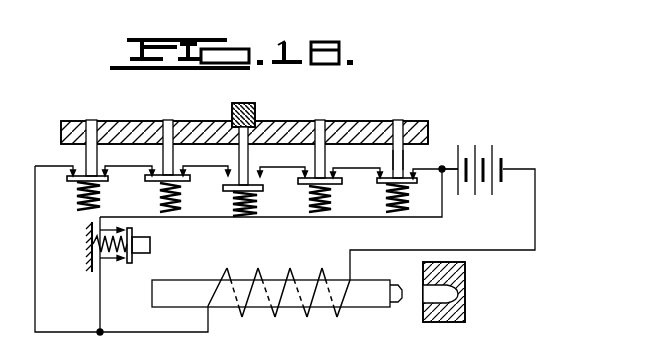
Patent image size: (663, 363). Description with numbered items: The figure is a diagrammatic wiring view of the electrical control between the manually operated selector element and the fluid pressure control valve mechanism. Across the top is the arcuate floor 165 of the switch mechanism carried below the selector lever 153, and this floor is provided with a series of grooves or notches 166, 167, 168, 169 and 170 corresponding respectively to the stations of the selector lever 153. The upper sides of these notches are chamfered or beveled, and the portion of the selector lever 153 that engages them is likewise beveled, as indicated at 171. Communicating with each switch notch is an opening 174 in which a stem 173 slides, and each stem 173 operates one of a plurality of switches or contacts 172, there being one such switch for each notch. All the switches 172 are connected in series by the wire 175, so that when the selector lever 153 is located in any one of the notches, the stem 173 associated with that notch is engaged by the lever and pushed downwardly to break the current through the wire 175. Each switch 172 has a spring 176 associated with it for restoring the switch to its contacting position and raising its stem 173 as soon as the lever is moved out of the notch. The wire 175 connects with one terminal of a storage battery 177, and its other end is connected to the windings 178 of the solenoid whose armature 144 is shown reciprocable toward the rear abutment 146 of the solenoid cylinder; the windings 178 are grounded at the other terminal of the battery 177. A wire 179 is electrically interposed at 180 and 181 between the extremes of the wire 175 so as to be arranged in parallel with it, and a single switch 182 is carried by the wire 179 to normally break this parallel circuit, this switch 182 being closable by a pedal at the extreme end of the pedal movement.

The armature 144 is at (258, 308).
The rear abutment 146 is at (462, 276).
The selector lever 153 is at (233, 103).
The arcuate floor 165 is at (430, 128).
The notch 166 is at (248, 92).
The notch 167 is at (320, 122).
The notch 168 is at (402, 122).
The notch 169 is at (168, 120).
The notch 170 is at (90, 120).
The beveled portion 171 is at (254, 124).
The switch 172 is at (382, 183).
The stem 173 is at (403, 157).
The opening 174 is at (385, 123).
The wire 175 is at (442, 171).
The spring 176 is at (160, 200).
The storage battery 177 is at (476, 146).
The windings 178 is at (260, 270).
The wire 179 is at (215, 218).
The connection point 180 is at (442, 172).
The connection point 181 is at (100, 334).
The switch 182 is at (150, 245).